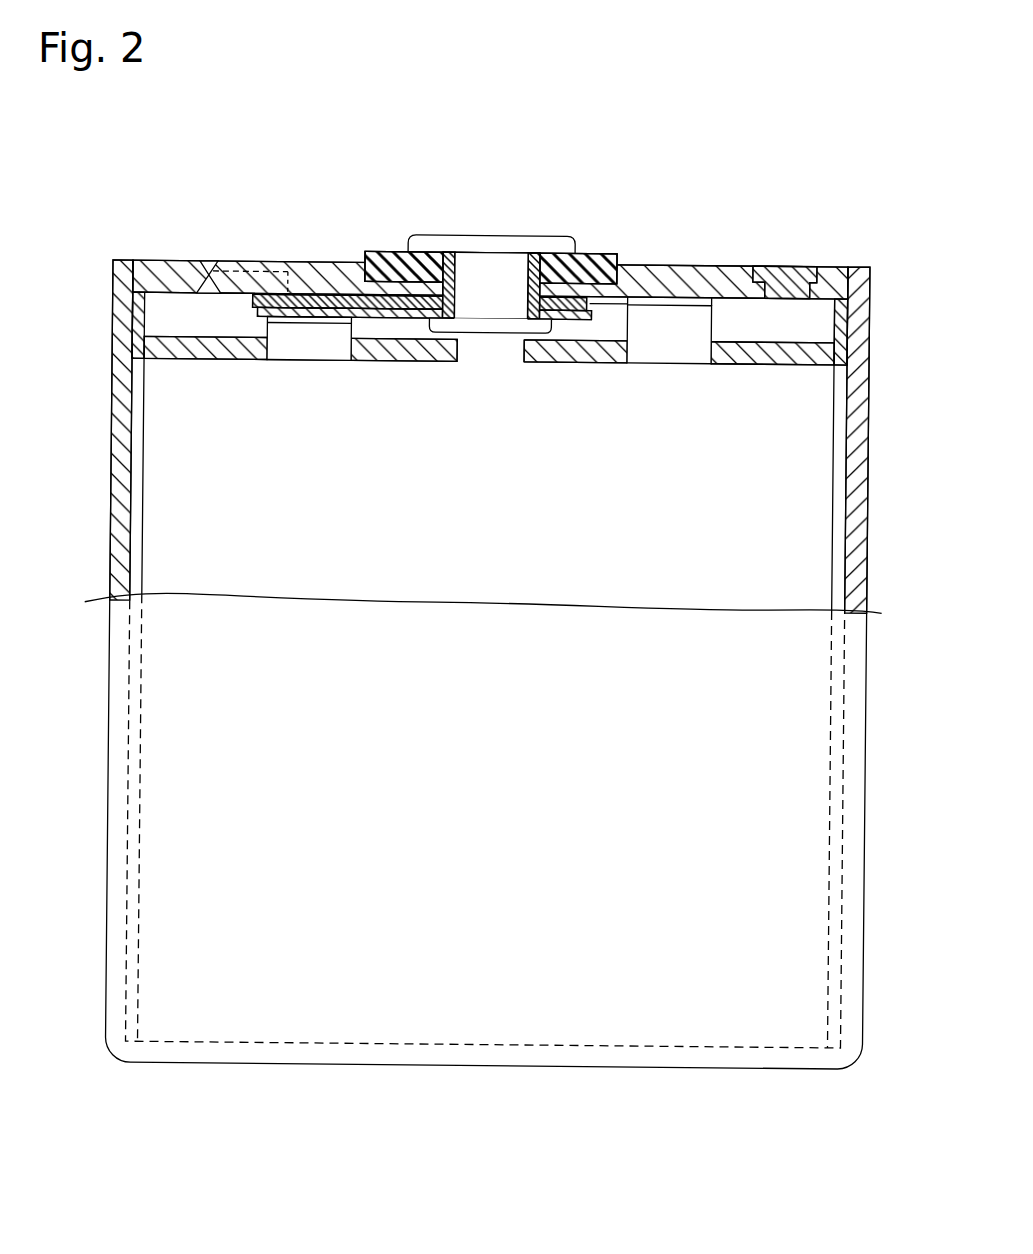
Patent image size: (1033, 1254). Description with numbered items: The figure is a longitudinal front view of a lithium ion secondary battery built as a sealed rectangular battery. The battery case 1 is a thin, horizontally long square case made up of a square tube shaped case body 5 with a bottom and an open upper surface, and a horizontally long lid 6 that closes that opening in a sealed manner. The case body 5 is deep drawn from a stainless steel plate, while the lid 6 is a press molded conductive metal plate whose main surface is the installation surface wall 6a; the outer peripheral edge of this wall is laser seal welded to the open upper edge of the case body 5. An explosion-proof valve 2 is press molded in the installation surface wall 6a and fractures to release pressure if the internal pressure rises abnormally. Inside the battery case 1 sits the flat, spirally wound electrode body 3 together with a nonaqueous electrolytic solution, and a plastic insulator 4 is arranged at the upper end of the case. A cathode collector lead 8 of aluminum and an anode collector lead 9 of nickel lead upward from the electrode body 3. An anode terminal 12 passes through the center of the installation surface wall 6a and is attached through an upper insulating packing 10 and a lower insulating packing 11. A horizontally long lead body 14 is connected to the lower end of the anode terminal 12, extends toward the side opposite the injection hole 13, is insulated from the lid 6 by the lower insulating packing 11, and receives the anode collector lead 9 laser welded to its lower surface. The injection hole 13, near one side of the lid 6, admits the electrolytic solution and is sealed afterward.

The battery case 1 is at (880, 291).
The explosion-proof valve 2 is at (213, 258).
The electrode body 3 is at (172, 519).
The insulator 4 is at (772, 352).
The case body 5 is at (873, 357).
The lid 6 is at (708, 261).
The installation surface wall 6a is at (176, 272).
The cathode collector lead 8 is at (664, 334).
The anode collector lead 9 is at (313, 338).
The upper insulating packing 10 is at (604, 256).
The lower insulating packing 11 is at (573, 308).
The anode terminal 12 is at (446, 233).
The injection hole 13 is at (788, 264).
The lead body 14 is at (401, 316).